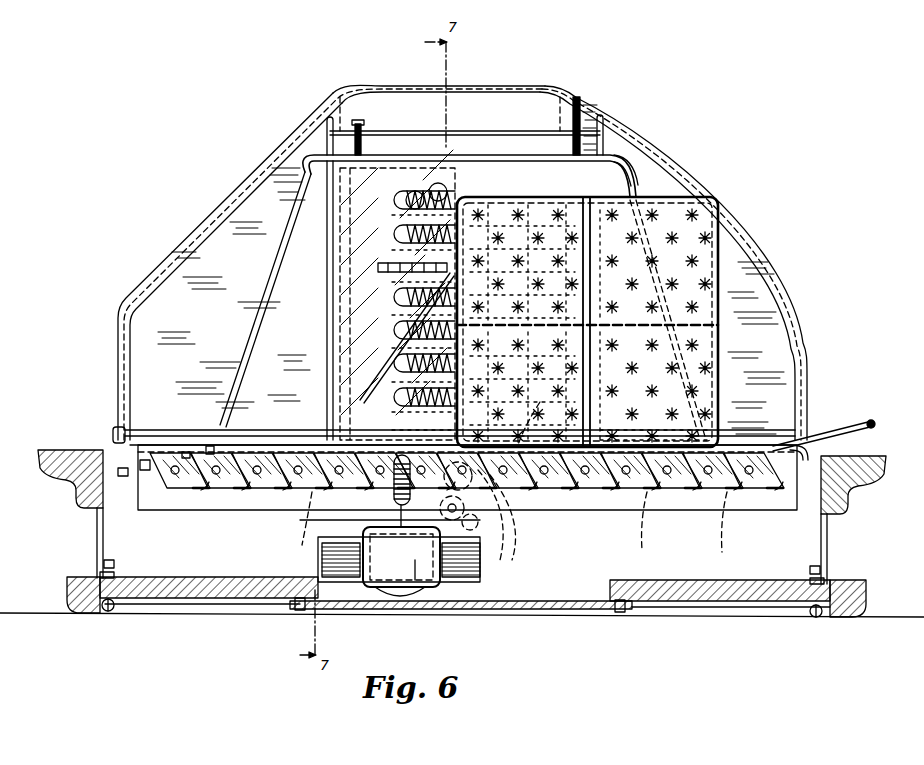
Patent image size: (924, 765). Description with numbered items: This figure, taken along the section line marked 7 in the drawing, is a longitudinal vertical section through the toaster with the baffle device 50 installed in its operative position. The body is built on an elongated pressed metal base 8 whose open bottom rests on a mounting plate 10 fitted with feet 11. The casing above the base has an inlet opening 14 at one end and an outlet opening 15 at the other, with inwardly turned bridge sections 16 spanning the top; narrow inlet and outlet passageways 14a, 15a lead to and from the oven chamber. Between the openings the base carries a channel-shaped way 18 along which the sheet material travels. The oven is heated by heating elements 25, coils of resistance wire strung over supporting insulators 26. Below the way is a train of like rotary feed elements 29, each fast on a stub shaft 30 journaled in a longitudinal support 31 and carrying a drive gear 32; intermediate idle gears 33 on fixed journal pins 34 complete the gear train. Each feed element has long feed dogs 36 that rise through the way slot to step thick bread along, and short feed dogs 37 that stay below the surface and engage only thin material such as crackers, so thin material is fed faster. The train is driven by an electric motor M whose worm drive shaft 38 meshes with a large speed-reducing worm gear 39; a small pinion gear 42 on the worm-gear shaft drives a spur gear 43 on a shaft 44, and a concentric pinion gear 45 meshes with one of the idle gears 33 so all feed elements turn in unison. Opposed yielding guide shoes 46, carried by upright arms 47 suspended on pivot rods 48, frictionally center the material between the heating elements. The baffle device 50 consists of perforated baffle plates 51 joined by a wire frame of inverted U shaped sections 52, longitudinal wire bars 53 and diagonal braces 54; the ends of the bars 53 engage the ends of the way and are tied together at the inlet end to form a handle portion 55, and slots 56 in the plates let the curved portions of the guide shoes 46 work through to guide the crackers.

The cushion 7 is at (718, 207).
The base 8 is at (95, 537).
The mounting plate 10 is at (80, 581).
The feet 11 is at (72, 610).
The inlet opening 14 is at (818, 352).
The inlet passageway 14a is at (760, 302).
The outlet opening 15 is at (183, 240).
The outlet passageway 15a is at (240, 218).
The bridge sections 16 is at (482, 87).
The way 18 is at (772, 446).
The heating elements 25 is at (410, 195).
The supporting insulators 26 is at (445, 185).
The rotary feed elements 29 is at (203, 492).
The stub shaft 30 is at (174, 476).
The support 31 is at (137, 488).
The drive gear 32 is at (514, 531).
The idle gears 33 is at (216, 492).
The journal pins 34 is at (732, 414).
The long feed dogs 36 is at (148, 465).
The short feed dogs 37 is at (186, 460).
The worm drive shaft 38 is at (397, 492).
The worm gear 39 is at (540, 402).
The pinion gear 42 is at (500, 548).
The spur gear 43 is at (450, 570).
The shaft 44 is at (475, 565).
The pinion gear 45 is at (492, 570).
The guide shoes 46 is at (378, 268).
The upright arms 47 is at (368, 138).
The pivot rods 48 is at (512, 118).
The baffle device 50 is at (634, 172).
The baffle plates 51 is at (352, 332).
The inverted U shaped sections 52 is at (330, 120).
The wire bars 53 is at (332, 430).
The diagonal braces 54 is at (270, 282).
The handle portion 55 is at (872, 420).
The slots 56 is at (392, 283).
The electric motor M is at (421, 587).